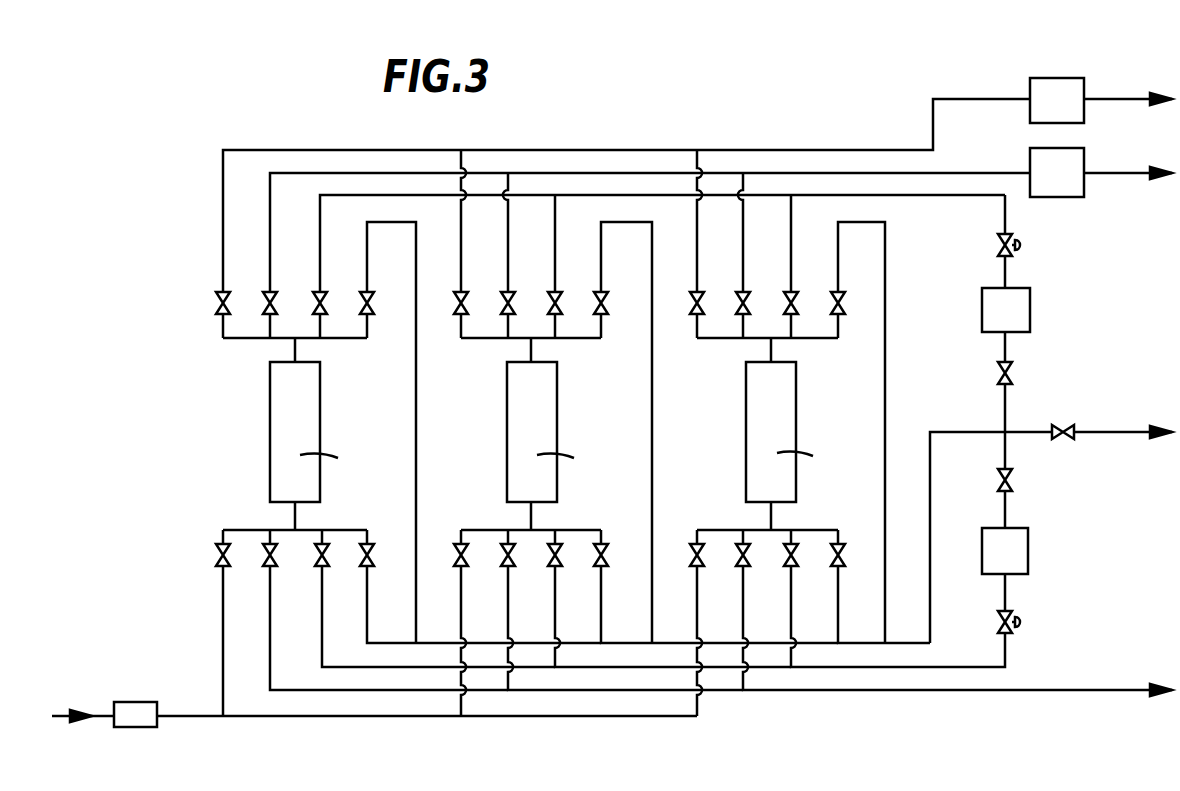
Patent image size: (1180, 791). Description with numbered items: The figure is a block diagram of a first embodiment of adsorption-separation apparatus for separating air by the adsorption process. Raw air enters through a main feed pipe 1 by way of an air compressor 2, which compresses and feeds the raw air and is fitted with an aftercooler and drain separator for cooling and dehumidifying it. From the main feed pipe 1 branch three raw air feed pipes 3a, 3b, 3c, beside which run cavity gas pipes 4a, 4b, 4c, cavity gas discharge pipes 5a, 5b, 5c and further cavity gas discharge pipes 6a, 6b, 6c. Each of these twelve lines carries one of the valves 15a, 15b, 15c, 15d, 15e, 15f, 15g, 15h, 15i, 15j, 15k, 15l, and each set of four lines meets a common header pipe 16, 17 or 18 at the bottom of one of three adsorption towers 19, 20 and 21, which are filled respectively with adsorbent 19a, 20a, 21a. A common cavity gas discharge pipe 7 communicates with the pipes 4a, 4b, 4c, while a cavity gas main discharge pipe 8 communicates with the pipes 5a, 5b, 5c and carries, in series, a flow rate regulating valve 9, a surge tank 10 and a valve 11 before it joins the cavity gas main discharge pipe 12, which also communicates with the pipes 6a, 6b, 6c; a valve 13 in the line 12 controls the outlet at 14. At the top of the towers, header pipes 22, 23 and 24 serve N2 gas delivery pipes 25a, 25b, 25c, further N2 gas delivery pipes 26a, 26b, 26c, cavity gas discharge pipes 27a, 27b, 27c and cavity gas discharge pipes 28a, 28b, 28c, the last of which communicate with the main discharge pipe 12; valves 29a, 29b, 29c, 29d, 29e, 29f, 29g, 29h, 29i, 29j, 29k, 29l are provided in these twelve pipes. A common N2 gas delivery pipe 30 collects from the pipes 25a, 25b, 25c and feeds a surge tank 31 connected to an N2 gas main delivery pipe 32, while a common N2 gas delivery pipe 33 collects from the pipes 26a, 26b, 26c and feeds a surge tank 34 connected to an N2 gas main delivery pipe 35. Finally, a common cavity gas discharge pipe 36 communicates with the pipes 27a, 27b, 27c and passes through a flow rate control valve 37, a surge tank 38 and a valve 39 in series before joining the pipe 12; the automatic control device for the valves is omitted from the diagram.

The main feed pipe 1 is at (100, 716).
The air compressor 2 is at (138, 702).
The raw air feed pipe 3a is at (224, 700).
The raw air feed pipe 3b is at (462, 703).
The raw air feed pipe 3c is at (698, 703).
The cavity gas pipe 4a is at (271, 667).
The cavity gas pipe 4b is at (509, 684).
The cavity gas pipe 4c is at (744, 686).
The cavity gas discharge pipe 5a is at (323, 651).
The cavity gas discharge pipe 5b is at (556, 660).
The cavity gas discharge pipe 5c is at (791, 658).
The cavity gas discharge pipe 6a is at (416, 622).
The cavity gas discharge pipe 6b is at (652, 622).
The cavity gas discharge pipe 6c is at (885, 628).
The common cavity gas discharge pipe 7 is at (1125, 690).
The cavity gas main discharge pipe 8 is at (1003, 660).
The flow rate regulating valve 9 is at (1022, 622).
The surge tank 10 is at (1029, 555).
The valve 11 is at (1012, 478).
The cavity gas main discharge pipe 12 is at (976, 432).
The valve 13 is at (1063, 425).
The outlet 14 is at (1127, 432).
The valve 15a is at (220, 563).
The valve 15b is at (268, 563).
The valve 15c is at (320, 563).
The valve 15d is at (365, 563).
The valve 15e is at (459, 563).
The valve 15f is at (506, 563).
The valve 15g is at (553, 563).
The valve 15h is at (599, 563).
The valve 15i is at (695, 563).
The valve 15j is at (741, 563).
The valve 15k is at (789, 563).
The valve 15l is at (836, 563).
The common header pipe 16 is at (296, 516).
The common header pipe 17 is at (532, 516).
The common header pipe 18 is at (772, 516).
The adsorption tower 19 is at (321, 401).
The adsorbent 19a is at (336, 455).
The adsorption tower 20 is at (558, 401).
The adsorbent 20a is at (575, 455).
The adsorption tower 21 is at (797, 401).
The adsorbent 21a is at (812, 453).
The header pipe 22 is at (296, 349).
The header pipe 23 is at (532, 349).
The header pipe 24 is at (772, 349).
The N2 gas delivery pipe 25a is at (218, 324).
The N2 gas delivery pipe 26a is at (268, 324).
The cavity gas discharge pipe 27a is at (318, 324).
The cavity gas discharge pipe 28a is at (365, 324).
The N2 gas delivery pipe 25b is at (459, 324).
The N2 gas delivery pipe 26b is at (506, 324).
The cavity gas discharge pipe 27b is at (553, 324).
The cavity gas discharge pipe 28b is at (599, 324).
The N2 gas delivery pipe 25c is at (695, 324).
The N2 gas delivery pipe 26c is at (741, 324).
The cavity gas discharge pipe 27c is at (789, 324).
The cavity gas discharge pipe 28c is at (836, 324).
The valve 29a is at (230, 303).
The valve 29b is at (277, 303).
The valve 29c is at (327, 303).
The valve 29d is at (374, 303).
The valve 29e is at (468, 303).
The valve 29f is at (515, 303).
The valve 29g is at (562, 303).
The valve 29h is at (608, 303).
The valve 29i is at (704, 303).
The valve 29j is at (750, 303).
The valve 29k is at (798, 303).
The valve 29l is at (845, 303).
The common N2 gas delivery pipe 30 is at (818, 150).
The surge tank 31 is at (1058, 78).
The N2 gas main delivery pipe 32 is at (1118, 99).
The common N2 gas delivery pipe 33 is at (972, 173).
The surge tank 34 is at (1072, 148).
The N2 gas main delivery pipe 35 is at (1122, 173).
The common cavity gas discharge pipe 36 is at (936, 195).
The flow rate control valve 37 is at (1023, 245).
The surge tank 38 is at (1031, 310).
The valve 39 is at (1012, 375).